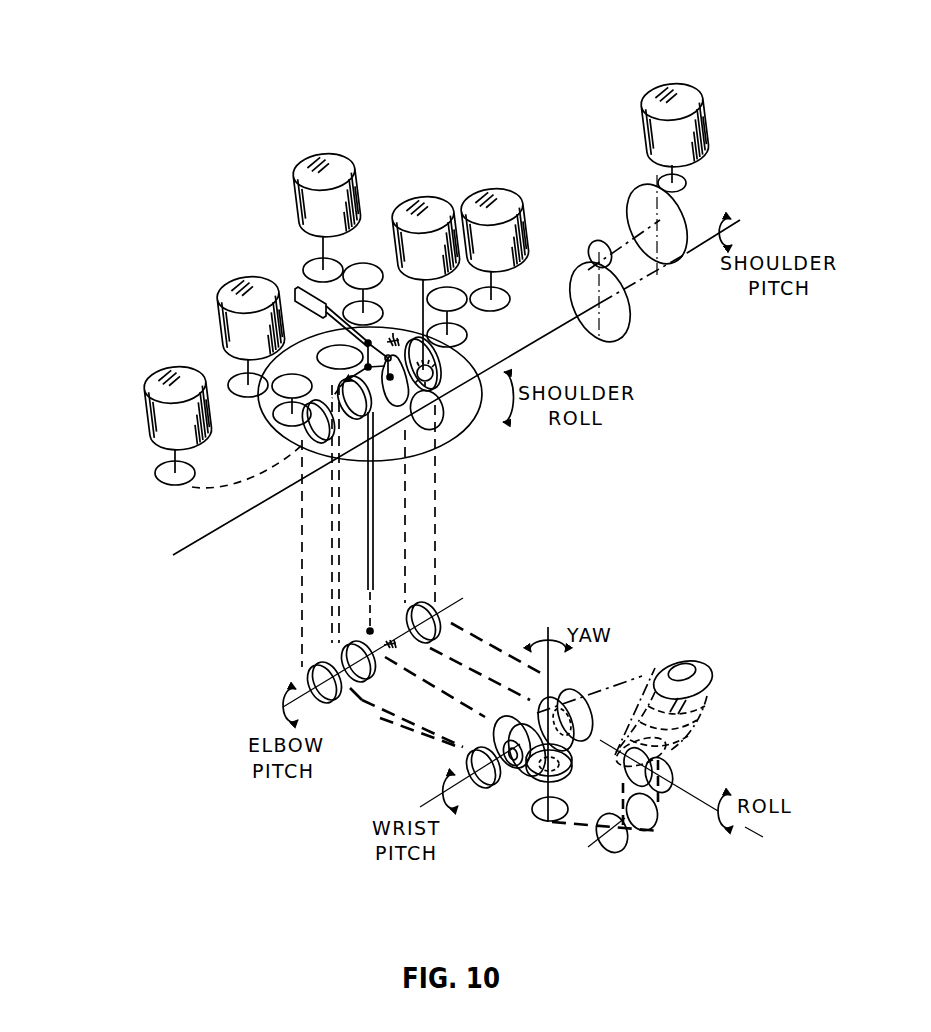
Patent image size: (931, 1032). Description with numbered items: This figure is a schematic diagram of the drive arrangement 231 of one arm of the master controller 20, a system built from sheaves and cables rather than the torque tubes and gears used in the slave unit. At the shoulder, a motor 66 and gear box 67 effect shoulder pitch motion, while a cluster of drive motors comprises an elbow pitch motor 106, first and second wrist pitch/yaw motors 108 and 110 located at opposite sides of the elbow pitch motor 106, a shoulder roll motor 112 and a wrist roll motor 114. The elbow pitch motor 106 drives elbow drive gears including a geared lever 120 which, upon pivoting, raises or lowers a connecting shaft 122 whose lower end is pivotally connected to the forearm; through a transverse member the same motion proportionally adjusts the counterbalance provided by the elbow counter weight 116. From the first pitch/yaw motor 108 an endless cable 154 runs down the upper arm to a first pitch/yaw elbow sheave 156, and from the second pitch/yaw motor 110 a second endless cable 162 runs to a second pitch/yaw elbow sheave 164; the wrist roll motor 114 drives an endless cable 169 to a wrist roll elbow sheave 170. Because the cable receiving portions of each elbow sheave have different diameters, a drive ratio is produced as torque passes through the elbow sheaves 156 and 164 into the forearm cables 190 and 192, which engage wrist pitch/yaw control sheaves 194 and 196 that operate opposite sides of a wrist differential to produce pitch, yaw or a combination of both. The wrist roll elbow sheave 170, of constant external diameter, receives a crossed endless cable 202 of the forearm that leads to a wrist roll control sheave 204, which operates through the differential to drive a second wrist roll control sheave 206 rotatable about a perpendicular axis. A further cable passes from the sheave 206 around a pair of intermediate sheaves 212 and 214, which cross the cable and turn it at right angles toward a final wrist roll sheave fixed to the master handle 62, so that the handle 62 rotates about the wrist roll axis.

The master controller 20 is at (534, 102).
The master handle 62 is at (698, 676).
The motor 66 is at (701, 113).
The gear box 67 is at (679, 206).
The elbow pitch motor 106 is at (432, 217).
The first wrist pitch/yaw motor 108 is at (155, 448).
The second wrist pitch/yaw motor 110 is at (498, 205).
The shoulder roll motor 112 is at (293, 171).
The wrist roll motor 114 is at (217, 320).
The elbow counter weight 116 is at (296, 283).
The geared lever 120 is at (431, 447).
The connecting shaft 122 is at (373, 487).
The endless cable 154 is at (338, 540).
The first pitch/yaw elbow sheave 156 is at (342, 645).
The second endless cable 162 is at (436, 540).
The second pitch/yaw elbow sheave 164 is at (431, 597).
The endless cable 169 is at (302, 518).
The wrist roll elbow sheave 170 is at (305, 674).
The endless cable 190 is at (410, 673).
The endless cable 192 is at (472, 630).
The wrist pitch/yaw control sheave 194 is at (511, 773).
The wrist pitch/yaw control sheave 196 is at (561, 690).
The endless cable 202 is at (357, 695).
The wrist roll control sheave 204 is at (480, 792).
The second wrist roll control sheave 206 is at (549, 823).
The intermediate sheave 212 is at (658, 828).
The intermediate sheave 214 is at (614, 851).
The drive arrangement 231 is at (188, 733).